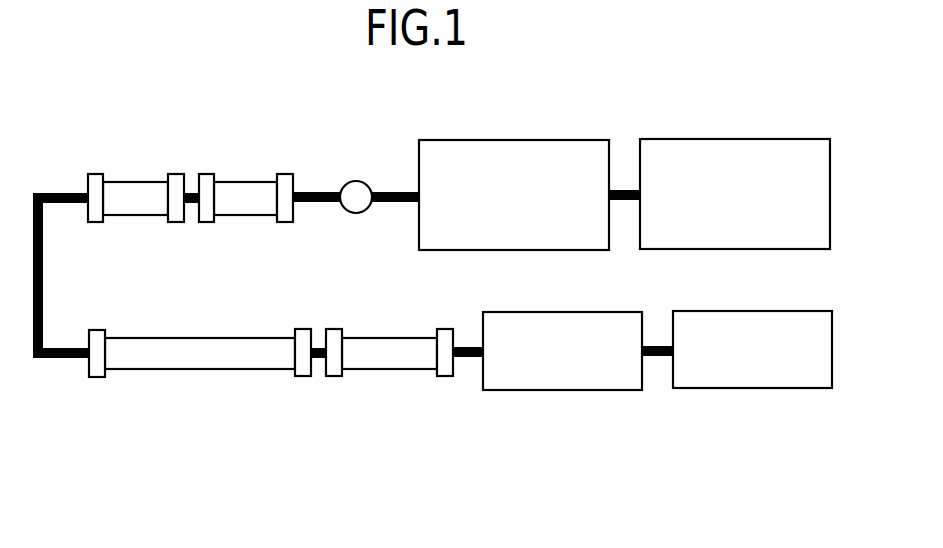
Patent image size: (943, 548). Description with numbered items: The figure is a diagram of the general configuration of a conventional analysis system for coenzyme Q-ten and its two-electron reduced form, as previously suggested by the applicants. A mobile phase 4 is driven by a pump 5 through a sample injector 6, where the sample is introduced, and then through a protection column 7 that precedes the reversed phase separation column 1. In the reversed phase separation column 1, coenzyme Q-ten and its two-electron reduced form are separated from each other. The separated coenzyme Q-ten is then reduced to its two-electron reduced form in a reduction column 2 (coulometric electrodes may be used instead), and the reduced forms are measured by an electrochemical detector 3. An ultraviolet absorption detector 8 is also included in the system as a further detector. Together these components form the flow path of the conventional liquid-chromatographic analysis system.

The reversed phase separation column 1 is at (202, 370).
The reduction column 2 is at (391, 370).
The electrochemical detector 3 is at (619, 392).
The mobile phase 4 is at (785, 140).
The pump 5 is at (564, 140).
The sample injector 6 is at (354, 181).
The protection column 7 is at (243, 181).
The ultraviolet absorption detector 8 is at (798, 390).